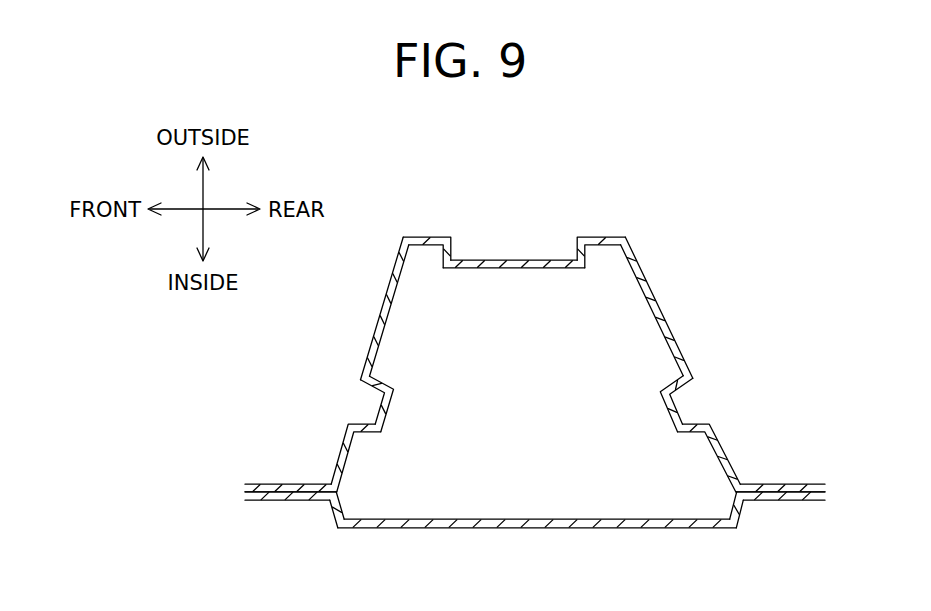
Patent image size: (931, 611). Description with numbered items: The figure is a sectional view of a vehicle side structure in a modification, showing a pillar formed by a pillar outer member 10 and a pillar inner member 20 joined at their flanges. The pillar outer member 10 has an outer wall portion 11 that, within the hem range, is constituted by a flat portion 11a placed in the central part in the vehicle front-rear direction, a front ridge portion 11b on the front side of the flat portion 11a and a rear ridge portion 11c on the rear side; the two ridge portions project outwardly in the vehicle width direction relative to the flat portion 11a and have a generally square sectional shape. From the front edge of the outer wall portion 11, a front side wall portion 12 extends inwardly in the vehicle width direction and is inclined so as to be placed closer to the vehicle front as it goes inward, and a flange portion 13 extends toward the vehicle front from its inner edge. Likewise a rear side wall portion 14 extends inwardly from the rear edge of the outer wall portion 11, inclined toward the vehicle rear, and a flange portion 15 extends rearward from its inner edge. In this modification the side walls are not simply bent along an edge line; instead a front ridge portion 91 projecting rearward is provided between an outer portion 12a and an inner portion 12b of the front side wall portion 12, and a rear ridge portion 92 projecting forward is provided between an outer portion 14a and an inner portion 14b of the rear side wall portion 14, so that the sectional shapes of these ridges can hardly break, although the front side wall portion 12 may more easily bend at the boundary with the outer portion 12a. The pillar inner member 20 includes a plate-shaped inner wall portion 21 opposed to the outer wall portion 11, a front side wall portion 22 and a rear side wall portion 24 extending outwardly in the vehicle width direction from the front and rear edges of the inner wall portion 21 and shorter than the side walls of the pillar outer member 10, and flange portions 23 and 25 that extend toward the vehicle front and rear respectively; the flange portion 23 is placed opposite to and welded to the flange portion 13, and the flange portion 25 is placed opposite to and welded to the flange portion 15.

The pillar outer member 10 is at (676, 267).
The outer wall portion 11 is at (595, 186).
The flat portion 11a is at (510, 261).
The front ridge portion 11b is at (423, 238).
The rear ridge portion 11c is at (603, 238).
The front side wall portion 12 is at (270, 332).
The outer portion 12a is at (375, 330).
The inner portion 12b is at (342, 438).
The flange portion 13 is at (263, 484).
The rear side wall portion 14 is at (788, 340).
The outer portion 14a is at (673, 336).
The inner portion 14b is at (723, 450).
The flange portion 15 is at (798, 484).
The pillar inner member 20 is at (675, 536).
The inner wall portion 21 is at (534, 528).
The front side wall portion 22 is at (333, 512).
The flange portion 23 is at (262, 501).
The rear side wall portion 24 is at (741, 513).
The flange portion 25 is at (797, 501).
The front ridge portion 91 is at (388, 405).
The rear ridge portion 92 is at (668, 410).